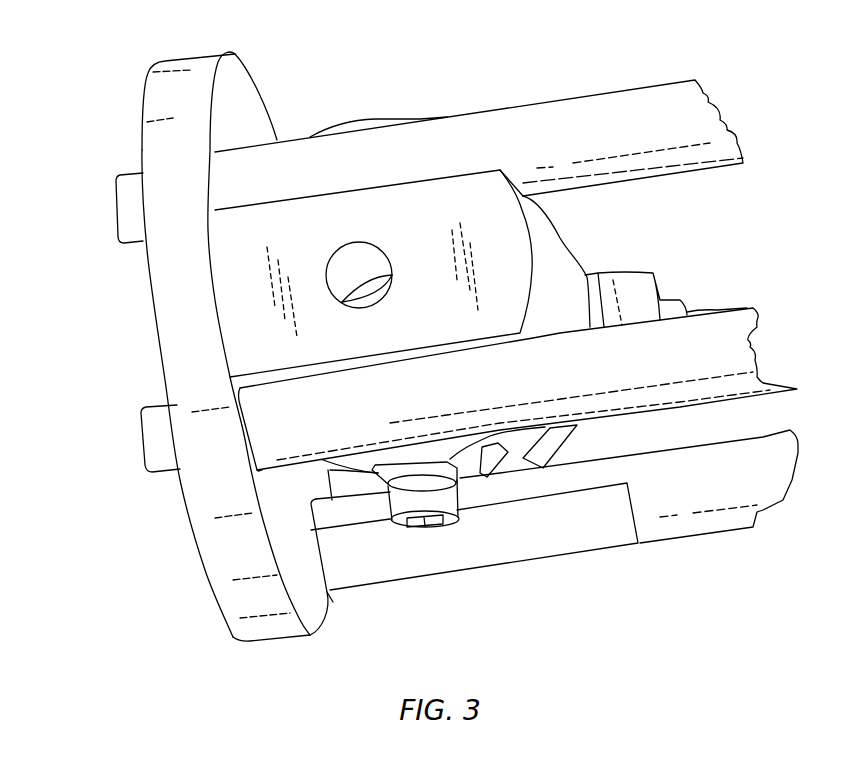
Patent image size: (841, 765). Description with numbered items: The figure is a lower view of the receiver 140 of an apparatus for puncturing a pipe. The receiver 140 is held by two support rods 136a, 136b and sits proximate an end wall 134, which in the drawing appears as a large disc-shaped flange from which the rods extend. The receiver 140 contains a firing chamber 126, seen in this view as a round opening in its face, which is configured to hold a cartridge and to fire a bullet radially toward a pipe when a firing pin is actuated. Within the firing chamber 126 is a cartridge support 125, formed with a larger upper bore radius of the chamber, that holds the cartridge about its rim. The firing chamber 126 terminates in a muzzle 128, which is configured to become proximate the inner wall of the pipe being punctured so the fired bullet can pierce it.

The end wall 134 is at (233, 90).
The support rod 136a is at (440, 137).
The support rod 136b is at (775, 396).
The receiver 140 is at (445, 297).
The firing chamber 126 is at (338, 275).
The cartridge support 125 is at (377, 262).
The muzzle 128 is at (385, 297).